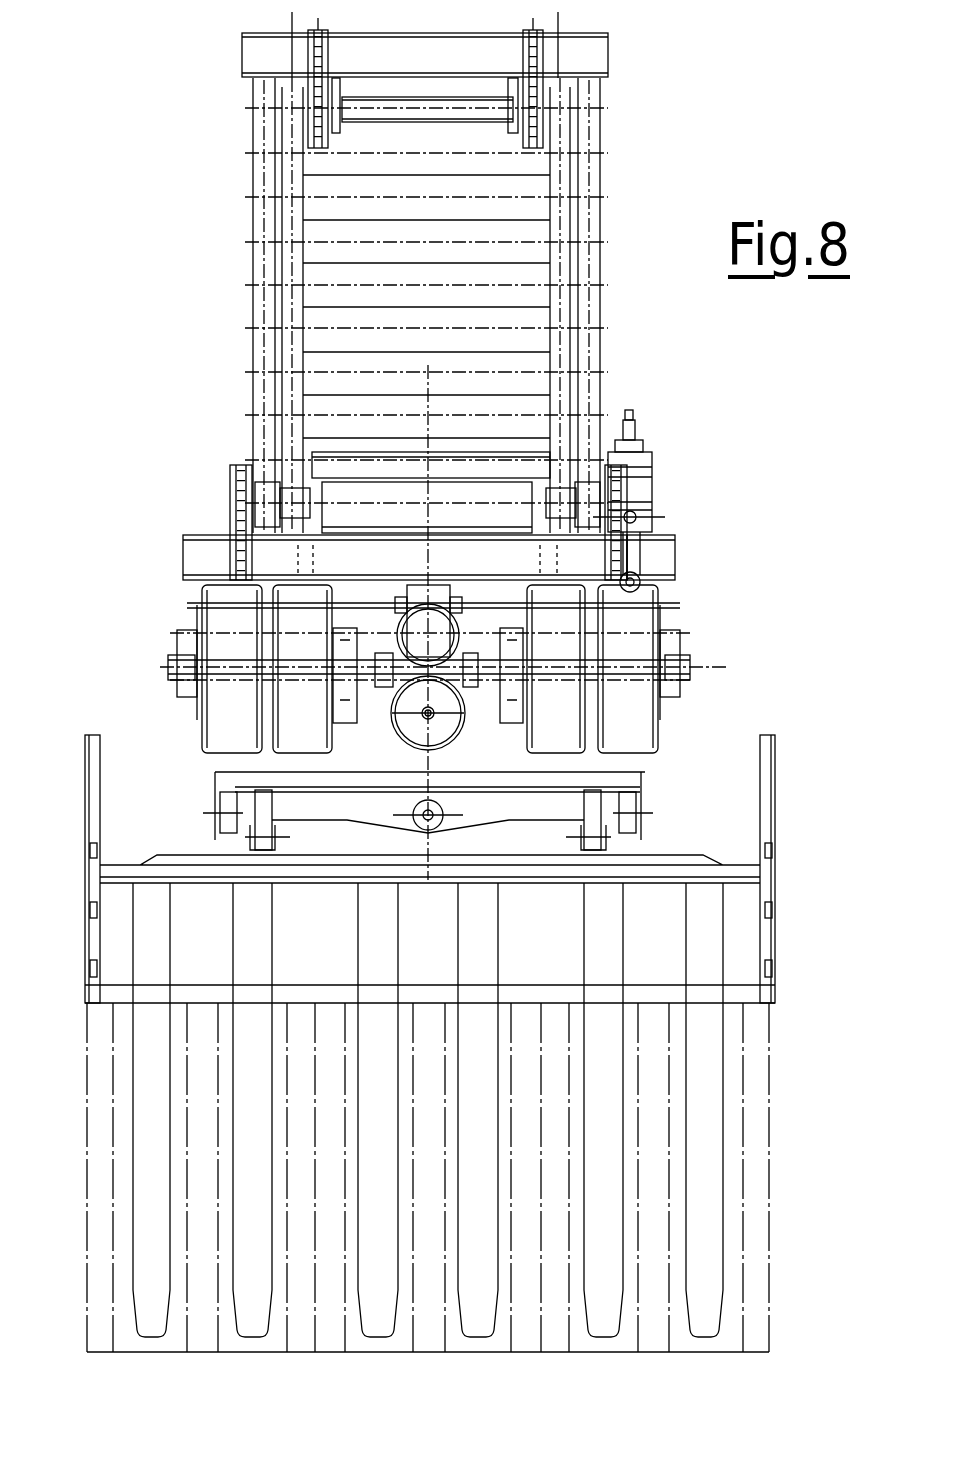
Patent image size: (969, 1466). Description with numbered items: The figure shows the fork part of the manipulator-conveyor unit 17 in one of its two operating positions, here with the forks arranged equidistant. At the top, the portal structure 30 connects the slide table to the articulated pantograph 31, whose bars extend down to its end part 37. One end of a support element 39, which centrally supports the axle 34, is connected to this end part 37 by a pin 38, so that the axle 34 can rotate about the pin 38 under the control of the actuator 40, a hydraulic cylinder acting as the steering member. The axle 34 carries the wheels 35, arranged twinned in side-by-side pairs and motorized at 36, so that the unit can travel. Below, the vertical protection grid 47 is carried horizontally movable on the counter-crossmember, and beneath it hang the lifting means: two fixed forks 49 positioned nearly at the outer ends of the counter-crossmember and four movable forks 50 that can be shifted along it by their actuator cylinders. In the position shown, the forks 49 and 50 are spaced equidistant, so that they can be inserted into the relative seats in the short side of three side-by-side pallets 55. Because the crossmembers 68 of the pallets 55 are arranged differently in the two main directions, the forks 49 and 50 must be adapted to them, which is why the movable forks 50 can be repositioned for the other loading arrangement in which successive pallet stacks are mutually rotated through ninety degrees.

The portal structure 30 is at (600, 50).
The articulated pantograph 31 is at (602, 253).
The manipulator-conveyor unit 17 is at (181, 553).
The end part of the pantograph 37 is at (660, 552).
The actuator 40 is at (638, 488).
The axle 34 is at (688, 664).
The pin 38 is at (428, 633).
The support element 39 is at (392, 640).
The motor 36 is at (443, 728).
The wheels 35 is at (283, 718).
The protection grid 47 is at (767, 996).
The fixed forks 49 is at (155, 1148).
The movable forks 50 is at (253, 1318).
The pallets 55 is at (164, 1352).
The crossmembers of the pallets 68 is at (203, 1332).